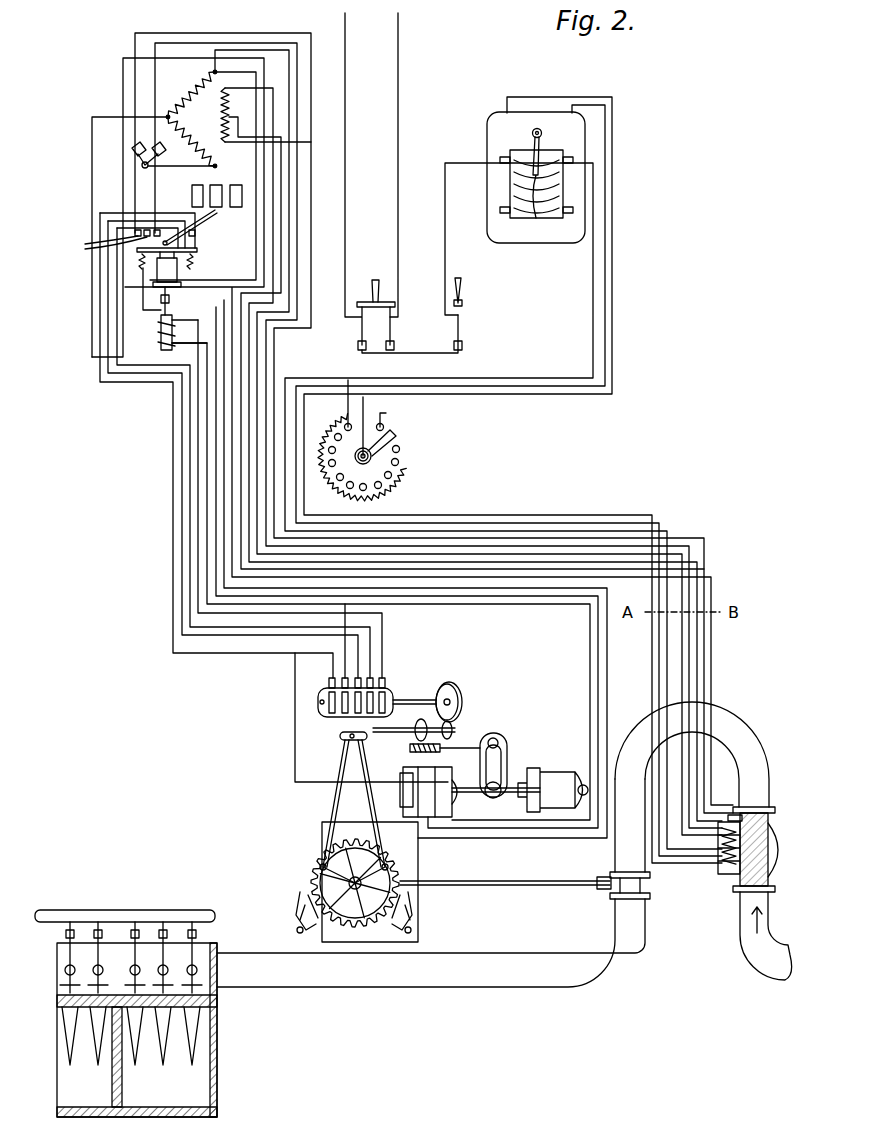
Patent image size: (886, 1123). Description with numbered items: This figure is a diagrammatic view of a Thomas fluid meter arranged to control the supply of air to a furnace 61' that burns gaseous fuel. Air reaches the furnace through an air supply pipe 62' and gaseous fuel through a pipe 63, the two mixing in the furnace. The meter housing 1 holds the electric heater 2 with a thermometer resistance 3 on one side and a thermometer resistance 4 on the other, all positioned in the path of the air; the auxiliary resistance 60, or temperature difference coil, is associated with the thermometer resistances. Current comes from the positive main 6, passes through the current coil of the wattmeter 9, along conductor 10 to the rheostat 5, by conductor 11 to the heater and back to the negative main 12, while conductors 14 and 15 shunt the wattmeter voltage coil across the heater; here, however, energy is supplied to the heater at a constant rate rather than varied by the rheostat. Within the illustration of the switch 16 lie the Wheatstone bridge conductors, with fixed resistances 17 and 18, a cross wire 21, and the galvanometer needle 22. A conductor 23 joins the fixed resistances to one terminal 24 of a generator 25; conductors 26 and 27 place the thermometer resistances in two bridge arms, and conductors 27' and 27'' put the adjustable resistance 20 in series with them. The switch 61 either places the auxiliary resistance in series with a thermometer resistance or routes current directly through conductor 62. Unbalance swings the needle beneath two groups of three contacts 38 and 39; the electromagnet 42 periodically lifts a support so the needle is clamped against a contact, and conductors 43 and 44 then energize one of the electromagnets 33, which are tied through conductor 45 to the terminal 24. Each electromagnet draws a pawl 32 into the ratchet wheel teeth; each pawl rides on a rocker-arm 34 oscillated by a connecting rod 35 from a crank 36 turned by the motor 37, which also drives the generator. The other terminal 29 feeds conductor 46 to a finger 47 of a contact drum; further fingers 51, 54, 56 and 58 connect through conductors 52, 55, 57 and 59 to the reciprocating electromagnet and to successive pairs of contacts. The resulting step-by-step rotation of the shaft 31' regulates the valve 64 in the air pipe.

The housing 1 is at (770, 885).
The electric heater 2 is at (770, 840).
The thermometer resistance 3 is at (770, 863).
The thermometer resistance 4 is at (772, 820).
The rheostat 5 is at (406, 447).
The positive main 6 is at (356, 16).
The wattmeter 9 is at (585, 150).
The conductor 10 is at (593, 300).
The conductor 11 is at (330, 403).
The negative main 12 is at (411, 14).
The conductor 14 is at (605, 318).
The conductor 15 is at (612, 358).
The switch 16 is at (123, 186).
The fixed resistance 17 is at (182, 142).
The fixed resistance 18 is at (191, 94).
The adjustable resistance 20 is at (237, 115).
The cross wire 21 is at (252, 171).
The galvanometer needle 22 is at (205, 238).
The conductor 23 is at (92, 186).
The terminal 24 is at (413, 778).
The generator 25 is at (460, 812).
The conductor 26 is at (200, 33).
The conductor 27 is at (436, 419).
The conductor 27' is at (473, 437).
The conductor 27'' is at (464, 343).
The terminal 29 is at (404, 800).
The shaft 31' is at (505, 875).
The pawls 32 is at (298, 892).
The electromagnets 33 is at (300, 908).
The rocker-arm 34 is at (355, 883).
The connecting rod 35 is at (342, 768).
The crank 36 is at (410, 750).
The motor 37 is at (552, 770).
The contacts 38 is at (220, 445).
The contacts 39 is at (197, 250).
The electromagnet 42 is at (173, 330).
The conductor 43 is at (143, 312).
The conductor 44 is at (190, 262).
The conductor 45 is at (418, 938).
The conductor 46 is at (295, 748).
The finger 47 is at (326, 680).
The finger 51 is at (358, 678).
The conductor 52 is at (207, 442).
The finger 54 is at (370, 678).
The conductor 55 is at (173, 471).
The finger 56 is at (382, 680).
The conductor 57 is at (182, 489).
The finger 58 is at (385, 684).
The conductor 59 is at (190, 506).
The auxiliary resistance 60 is at (765, 807).
The switch 61 is at (131, 155).
The furnace 61' is at (156, 1019).
The conductor 62 is at (448, 414).
The air supply pipe 62' is at (504, 852).
The pipe 63 is at (157, 910).
The valve 64 is at (612, 896).